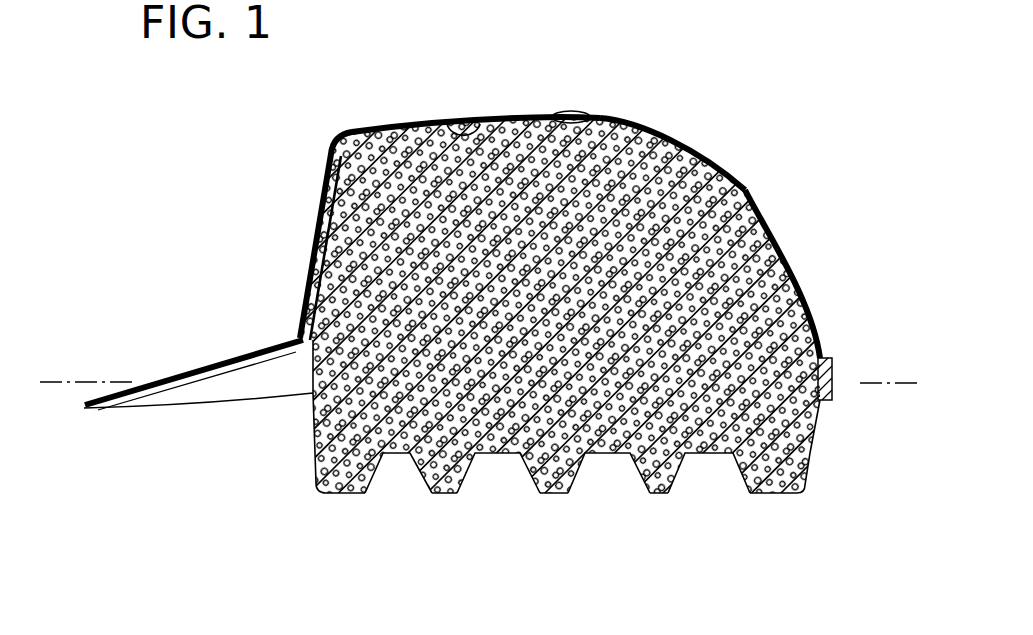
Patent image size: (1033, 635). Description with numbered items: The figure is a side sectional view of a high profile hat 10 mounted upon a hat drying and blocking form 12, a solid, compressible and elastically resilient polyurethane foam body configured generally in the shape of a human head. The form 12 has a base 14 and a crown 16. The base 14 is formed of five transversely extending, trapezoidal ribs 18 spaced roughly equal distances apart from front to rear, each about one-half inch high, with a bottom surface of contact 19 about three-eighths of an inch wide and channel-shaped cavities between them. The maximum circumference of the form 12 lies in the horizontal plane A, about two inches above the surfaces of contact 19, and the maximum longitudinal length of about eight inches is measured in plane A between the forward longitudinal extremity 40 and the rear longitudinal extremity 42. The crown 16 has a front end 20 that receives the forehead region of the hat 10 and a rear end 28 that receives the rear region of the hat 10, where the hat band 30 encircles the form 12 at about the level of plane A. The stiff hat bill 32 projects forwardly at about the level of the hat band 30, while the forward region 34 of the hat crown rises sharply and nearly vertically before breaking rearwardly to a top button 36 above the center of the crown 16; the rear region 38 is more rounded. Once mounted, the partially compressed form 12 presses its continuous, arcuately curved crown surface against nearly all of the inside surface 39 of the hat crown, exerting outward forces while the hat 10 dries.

The hat 10 is at (288, 150).
The hat drying and blocking form 12 is at (574, 522).
The base 14 is at (300, 458).
The crown 16 is at (668, 179).
The ribs 18 is at (429, 470).
The bottom surface of contact 19 is at (345, 494).
The front end 20 is at (305, 288).
The rear end 28 is at (816, 300).
The hat band 30 is at (833, 370).
The hat bill 32 is at (190, 372).
The forward region 34 is at (322, 201).
The top button 36 is at (568, 108).
The rear region 38 is at (755, 200).
The inside surface 39 is at (447, 137).
The forward longitudinal extremity 40 is at (266, 353).
The rear longitudinal extremity 42 is at (834, 378).
The horizontal plane A is at (875, 383).